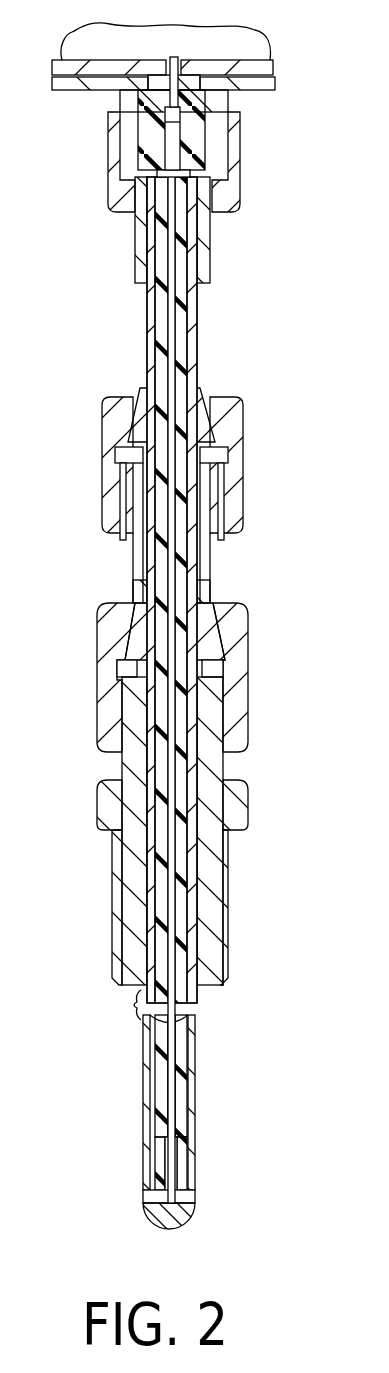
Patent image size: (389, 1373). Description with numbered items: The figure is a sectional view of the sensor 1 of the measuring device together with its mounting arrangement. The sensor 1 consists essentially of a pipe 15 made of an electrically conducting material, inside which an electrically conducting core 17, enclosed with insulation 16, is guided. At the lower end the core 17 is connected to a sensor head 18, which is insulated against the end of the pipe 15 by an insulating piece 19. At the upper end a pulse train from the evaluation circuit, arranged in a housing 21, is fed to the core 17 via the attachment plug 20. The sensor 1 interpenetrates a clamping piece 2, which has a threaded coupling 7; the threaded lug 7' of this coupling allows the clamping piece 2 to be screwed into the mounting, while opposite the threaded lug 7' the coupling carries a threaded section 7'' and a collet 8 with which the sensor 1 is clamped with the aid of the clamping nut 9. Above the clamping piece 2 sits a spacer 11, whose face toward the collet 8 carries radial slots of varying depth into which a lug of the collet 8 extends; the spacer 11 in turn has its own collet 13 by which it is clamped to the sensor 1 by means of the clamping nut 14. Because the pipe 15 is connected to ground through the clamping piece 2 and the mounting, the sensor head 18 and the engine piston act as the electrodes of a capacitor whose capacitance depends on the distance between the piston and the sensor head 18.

The sensor 1 is at (145, 325).
The clamping piece 2 is at (96, 665).
The threaded coupling 7 is at (197, 805).
The threaded lug 7' is at (191, 907).
The threaded section 7'' is at (210, 831).
The collet 8 is at (137, 615).
The clamping nut 9 is at (248, 665).
The spacer 11 is at (100, 438).
The collet 13 is at (207, 422).
The clamping nut 14 is at (245, 497).
The pipe 15 is at (196, 1058).
The insulation 16 is at (148, 1084).
The core 17 is at (190, 1121).
The sensor head 18 is at (183, 1218).
The insulating piece 19 is at (195, 1195).
The attachment plug 20 is at (236, 203).
The housing 21 is at (62, 88).